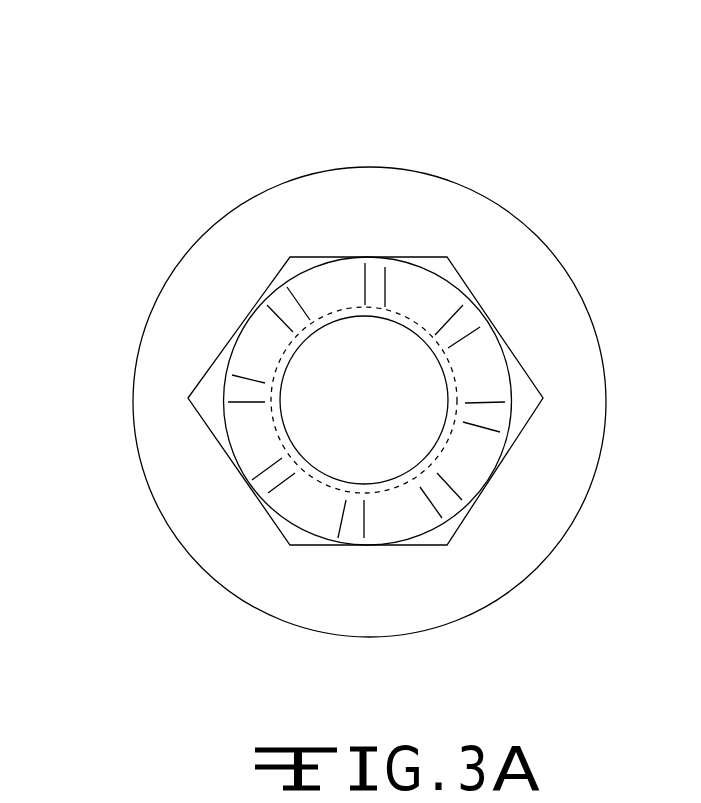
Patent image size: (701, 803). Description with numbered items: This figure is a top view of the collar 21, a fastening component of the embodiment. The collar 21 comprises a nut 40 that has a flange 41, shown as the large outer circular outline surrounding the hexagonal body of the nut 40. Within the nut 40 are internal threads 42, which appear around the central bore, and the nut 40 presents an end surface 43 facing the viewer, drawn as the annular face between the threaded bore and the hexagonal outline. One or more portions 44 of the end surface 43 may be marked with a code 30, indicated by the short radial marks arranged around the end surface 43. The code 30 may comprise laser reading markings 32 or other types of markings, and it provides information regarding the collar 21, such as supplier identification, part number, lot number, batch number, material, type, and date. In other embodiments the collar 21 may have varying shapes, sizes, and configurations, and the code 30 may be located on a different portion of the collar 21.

The collar 21 is at (458, 138).
The flange 41 is at (605, 438).
The nut 40 is at (515, 356).
The end surface 43 is at (427, 302).
The internal threads 42 is at (453, 438).
The portions of the end surface 44 is at (487, 377).
The code 30 is at (372, 485).
The laser reading markings 32 is at (428, 500).